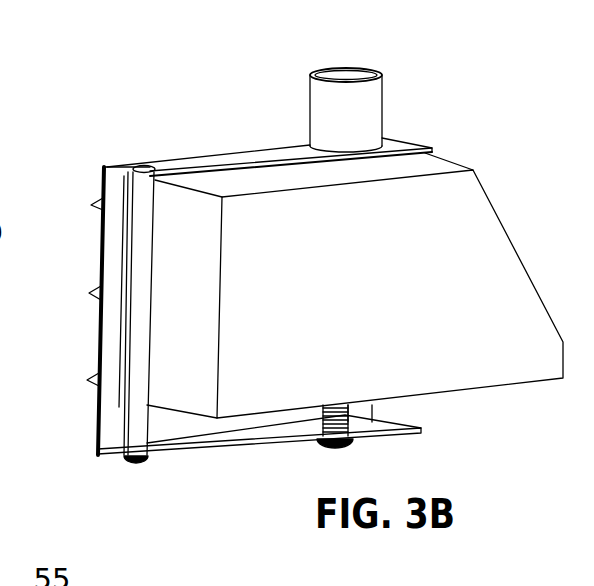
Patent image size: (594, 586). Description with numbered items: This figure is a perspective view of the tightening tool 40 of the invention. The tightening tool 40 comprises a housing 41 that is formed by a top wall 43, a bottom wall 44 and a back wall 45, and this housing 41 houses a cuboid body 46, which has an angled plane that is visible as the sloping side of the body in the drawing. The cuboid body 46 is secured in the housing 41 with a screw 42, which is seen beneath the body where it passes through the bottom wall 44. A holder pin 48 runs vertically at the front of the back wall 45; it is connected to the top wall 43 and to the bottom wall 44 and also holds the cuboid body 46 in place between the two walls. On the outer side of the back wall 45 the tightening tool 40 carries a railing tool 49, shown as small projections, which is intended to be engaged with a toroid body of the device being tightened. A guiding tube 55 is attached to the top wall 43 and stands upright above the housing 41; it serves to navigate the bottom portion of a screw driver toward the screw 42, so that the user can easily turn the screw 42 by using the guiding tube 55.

The tightening tool 40 is at (122, 91).
The housing 41 is at (395, 143).
The screw 42 is at (372, 408).
The top wall 43 is at (210, 163).
The bottom wall 44 is at (201, 448).
The back wall 45 is at (98, 412).
The cuboid body 46 is at (497, 263).
The holder pin 48 is at (138, 437).
The railing tool 49 is at (96, 297).
The guiding tube 55 is at (323, 93).